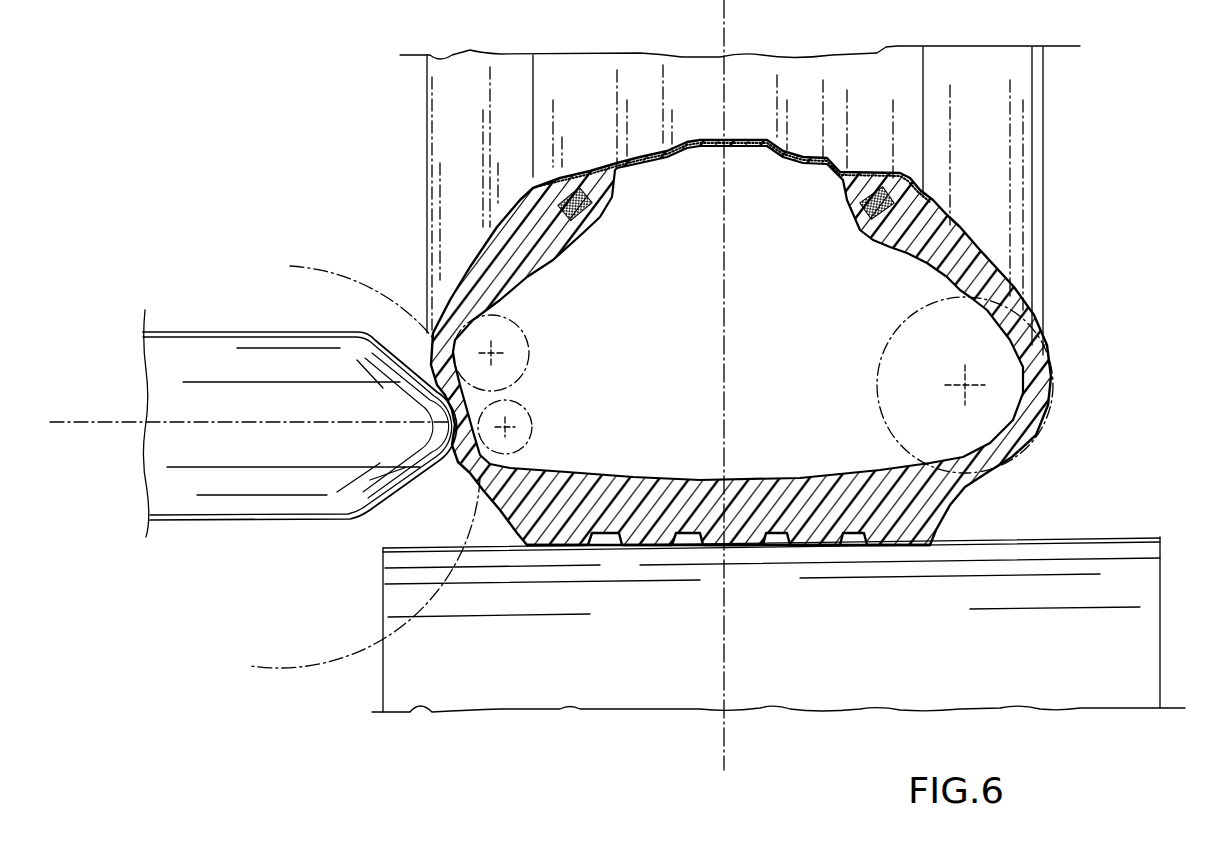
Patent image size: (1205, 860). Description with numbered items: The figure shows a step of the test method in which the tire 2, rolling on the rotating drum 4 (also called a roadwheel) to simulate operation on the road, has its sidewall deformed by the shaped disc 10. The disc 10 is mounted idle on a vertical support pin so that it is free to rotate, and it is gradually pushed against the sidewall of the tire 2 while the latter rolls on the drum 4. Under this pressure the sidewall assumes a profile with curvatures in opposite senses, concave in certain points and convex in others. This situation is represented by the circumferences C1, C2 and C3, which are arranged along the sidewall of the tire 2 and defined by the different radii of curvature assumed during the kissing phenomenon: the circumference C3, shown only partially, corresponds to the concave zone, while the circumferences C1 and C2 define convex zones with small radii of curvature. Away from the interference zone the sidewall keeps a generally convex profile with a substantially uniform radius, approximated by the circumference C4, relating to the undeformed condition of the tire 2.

The tire 2 is at (945, 242).
The rotating drum 4 is at (817, 647).
The shaped disc 10 is at (213, 353).
The circumference C1 is at (526, 408).
The circumference C2 is at (518, 326).
The circumference C3 is at (341, 278).
The circumference C4 is at (877, 372).